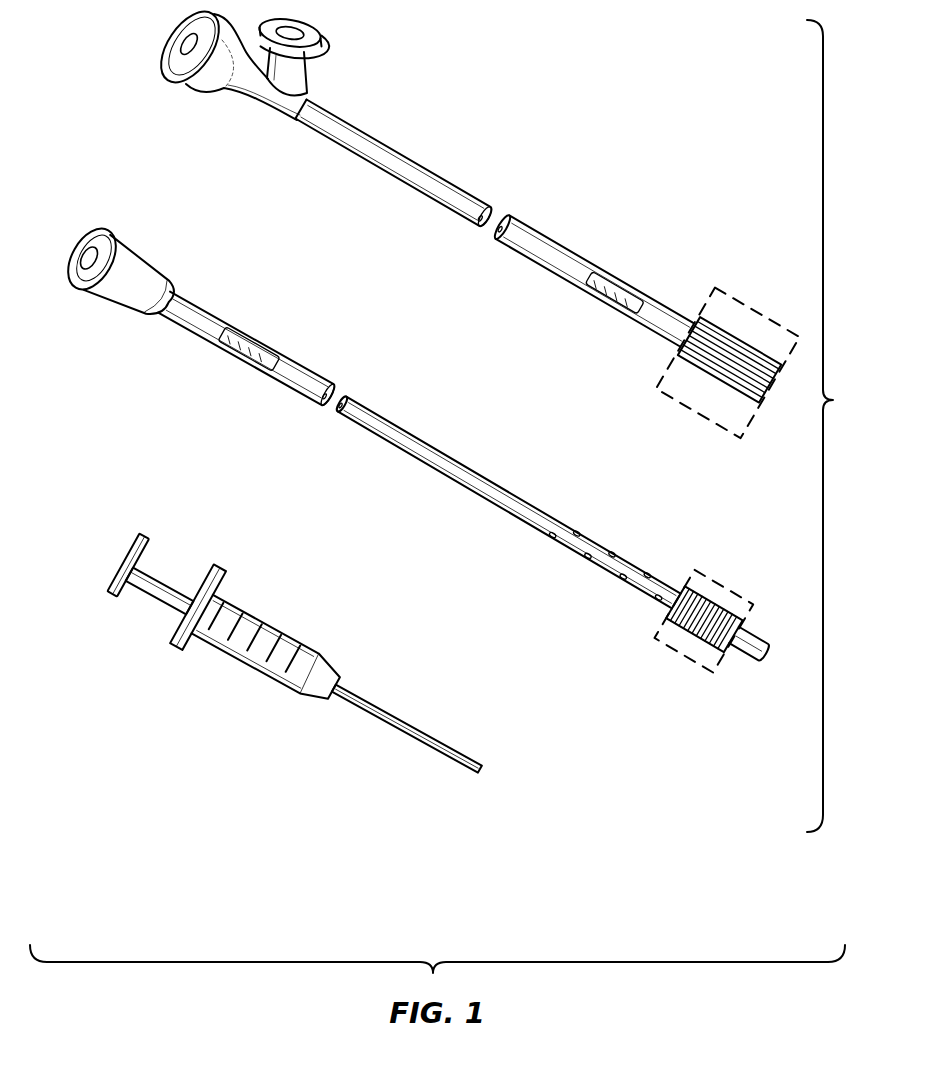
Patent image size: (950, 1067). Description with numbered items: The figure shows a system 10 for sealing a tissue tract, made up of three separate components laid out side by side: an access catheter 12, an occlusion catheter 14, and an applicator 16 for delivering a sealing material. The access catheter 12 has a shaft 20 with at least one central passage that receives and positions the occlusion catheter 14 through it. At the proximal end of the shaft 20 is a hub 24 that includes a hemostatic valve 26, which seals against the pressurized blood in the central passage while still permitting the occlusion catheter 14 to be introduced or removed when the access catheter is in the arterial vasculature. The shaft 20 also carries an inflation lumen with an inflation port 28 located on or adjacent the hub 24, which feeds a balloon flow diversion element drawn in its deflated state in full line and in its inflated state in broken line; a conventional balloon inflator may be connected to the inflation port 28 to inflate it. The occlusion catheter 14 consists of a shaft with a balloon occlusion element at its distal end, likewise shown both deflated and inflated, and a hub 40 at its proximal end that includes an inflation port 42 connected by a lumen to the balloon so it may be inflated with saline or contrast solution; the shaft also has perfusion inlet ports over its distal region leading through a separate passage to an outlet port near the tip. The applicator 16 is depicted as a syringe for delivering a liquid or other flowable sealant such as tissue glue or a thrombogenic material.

The system 10 is at (838, 426).
The access catheter 12 is at (634, 308).
The occlusion catheter 14 is at (551, 530).
The applicator 16 is at (320, 625).
The shaft 20 is at (368, 165).
The hub 24 is at (213, 78).
The hemostatic valve 26 is at (188, 43).
The inflation port 28 is at (313, 40).
The hub 40 is at (186, 320).
The inflation port 42 is at (92, 253).